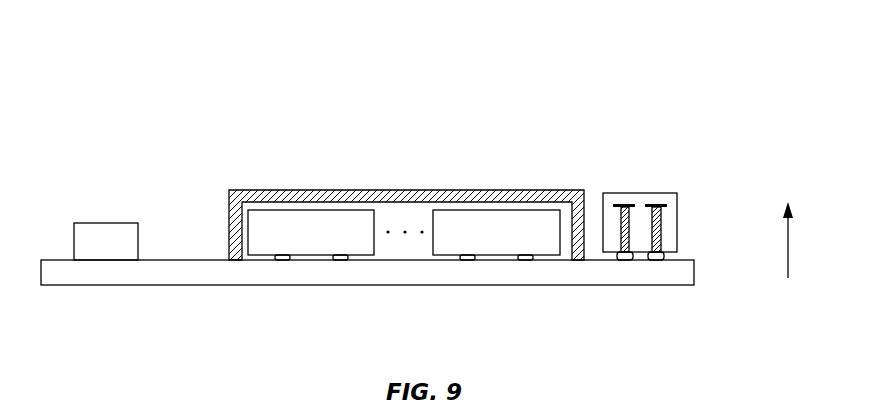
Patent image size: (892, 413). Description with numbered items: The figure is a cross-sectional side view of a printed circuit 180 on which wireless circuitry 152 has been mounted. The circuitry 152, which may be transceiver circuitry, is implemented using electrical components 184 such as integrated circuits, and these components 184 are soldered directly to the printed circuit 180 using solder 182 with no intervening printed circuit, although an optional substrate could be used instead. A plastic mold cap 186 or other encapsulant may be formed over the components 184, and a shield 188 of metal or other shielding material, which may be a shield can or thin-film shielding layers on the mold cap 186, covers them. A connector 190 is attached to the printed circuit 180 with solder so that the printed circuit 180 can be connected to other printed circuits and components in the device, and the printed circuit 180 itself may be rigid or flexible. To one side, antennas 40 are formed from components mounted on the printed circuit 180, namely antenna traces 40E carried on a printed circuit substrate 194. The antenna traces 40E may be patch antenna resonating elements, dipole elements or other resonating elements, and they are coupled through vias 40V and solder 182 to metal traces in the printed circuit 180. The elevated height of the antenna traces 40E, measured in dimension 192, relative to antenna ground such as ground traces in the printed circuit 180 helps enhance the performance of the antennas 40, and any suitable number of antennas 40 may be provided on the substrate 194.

The circuitry 152 is at (324, 68).
The printed circuit 180 is at (682, 285).
The solder 182 is at (341, 261).
The electrical components 184 is at (303, 222).
The mold cap 186 is at (406, 212).
The shield 188 is at (270, 192).
The connector 190 is at (104, 222).
The dimension 192 is at (789, 245).
The printed circuit substrate 194 is at (617, 195).
The antennas 40 is at (667, 152).
The antenna traces 40E is at (662, 208).
The vias 40V is at (654, 236).